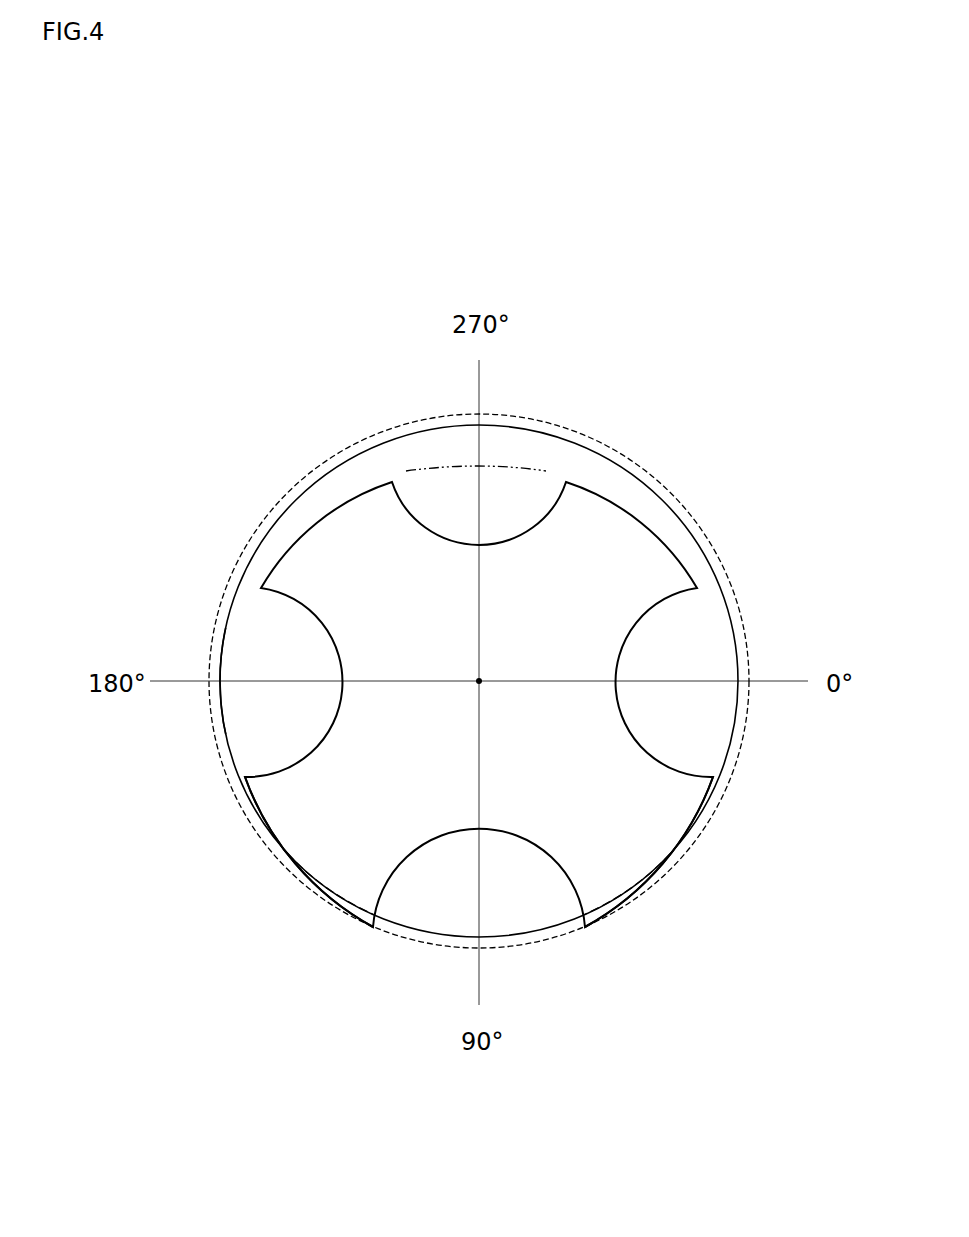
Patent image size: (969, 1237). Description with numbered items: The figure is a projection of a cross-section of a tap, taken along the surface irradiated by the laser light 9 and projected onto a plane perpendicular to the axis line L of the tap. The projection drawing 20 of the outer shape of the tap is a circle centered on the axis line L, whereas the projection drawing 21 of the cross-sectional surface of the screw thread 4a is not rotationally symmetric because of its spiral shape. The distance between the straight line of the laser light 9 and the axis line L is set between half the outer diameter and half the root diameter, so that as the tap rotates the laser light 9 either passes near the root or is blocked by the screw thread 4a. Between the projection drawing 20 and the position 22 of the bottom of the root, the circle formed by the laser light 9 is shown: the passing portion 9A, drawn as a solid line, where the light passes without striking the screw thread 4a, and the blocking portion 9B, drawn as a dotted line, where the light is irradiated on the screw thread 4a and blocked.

The screw thread 4a is at (343, 918).
The laser light 9 is at (228, 598).
The passing portion 9A is at (218, 738).
The blocking portion 9B is at (323, 901).
The projection drawing of outer shape 20 is at (537, 413).
The projection drawing of cross-sectional surface of screw thread 21 is at (620, 545).
The position of bottom of root 22 is at (479, 466).
The axis line L is at (481, 679).